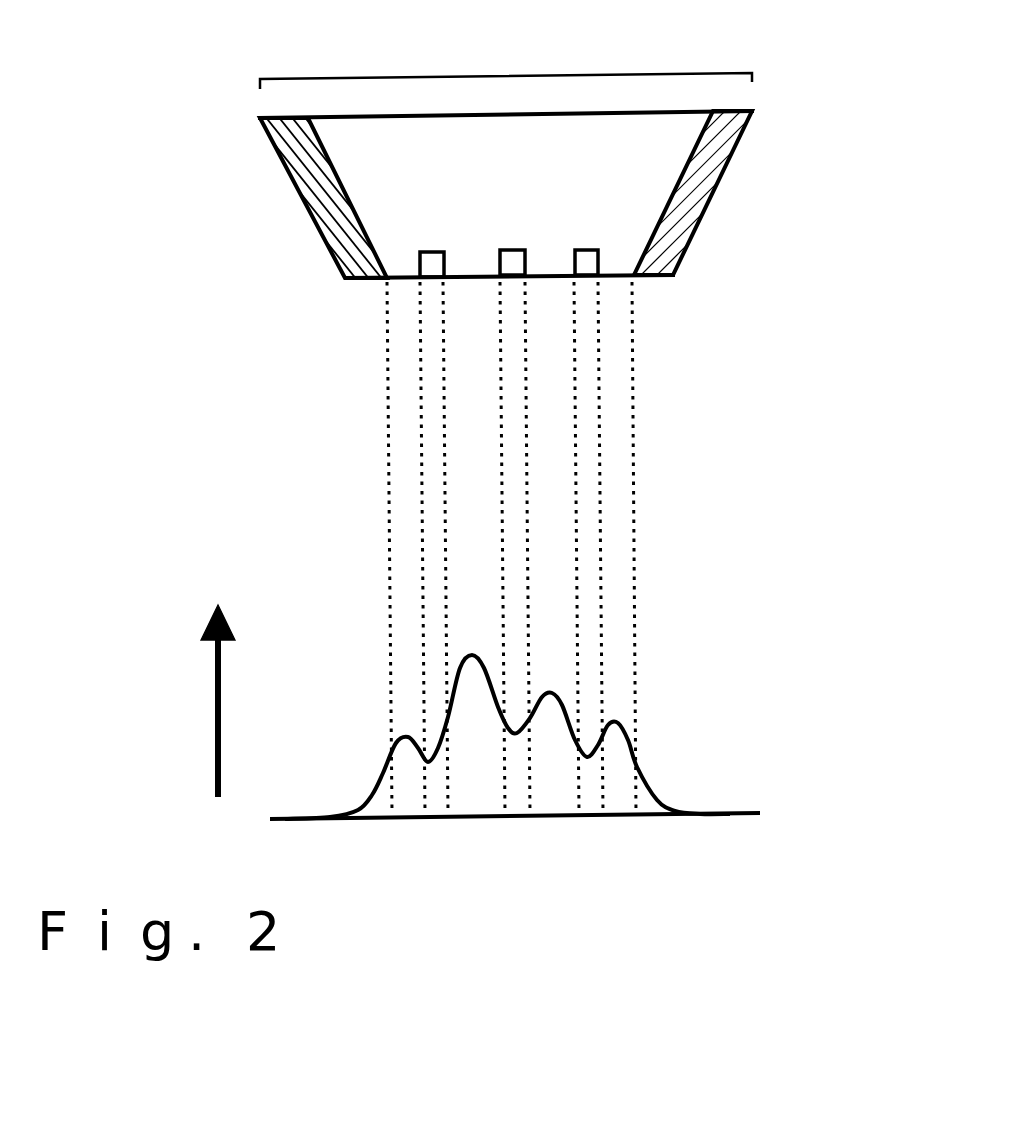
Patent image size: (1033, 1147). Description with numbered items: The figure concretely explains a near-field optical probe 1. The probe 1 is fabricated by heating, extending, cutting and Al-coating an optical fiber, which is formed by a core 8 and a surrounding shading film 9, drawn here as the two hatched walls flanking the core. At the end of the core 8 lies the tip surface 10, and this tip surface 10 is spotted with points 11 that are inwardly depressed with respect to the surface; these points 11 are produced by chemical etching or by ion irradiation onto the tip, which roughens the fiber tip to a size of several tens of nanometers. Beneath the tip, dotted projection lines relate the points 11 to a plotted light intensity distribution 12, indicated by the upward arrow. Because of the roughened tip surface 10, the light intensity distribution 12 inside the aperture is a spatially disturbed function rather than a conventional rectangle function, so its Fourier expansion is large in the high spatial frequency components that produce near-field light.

The near-field optical probe 1 is at (506, 54).
The core 8 is at (640, 177).
The shading film 9 is at (297, 172).
The tip surface 10 is at (385, 281).
The points 11 is at (415, 266).
The light intensity distribution 12 is at (448, 712).